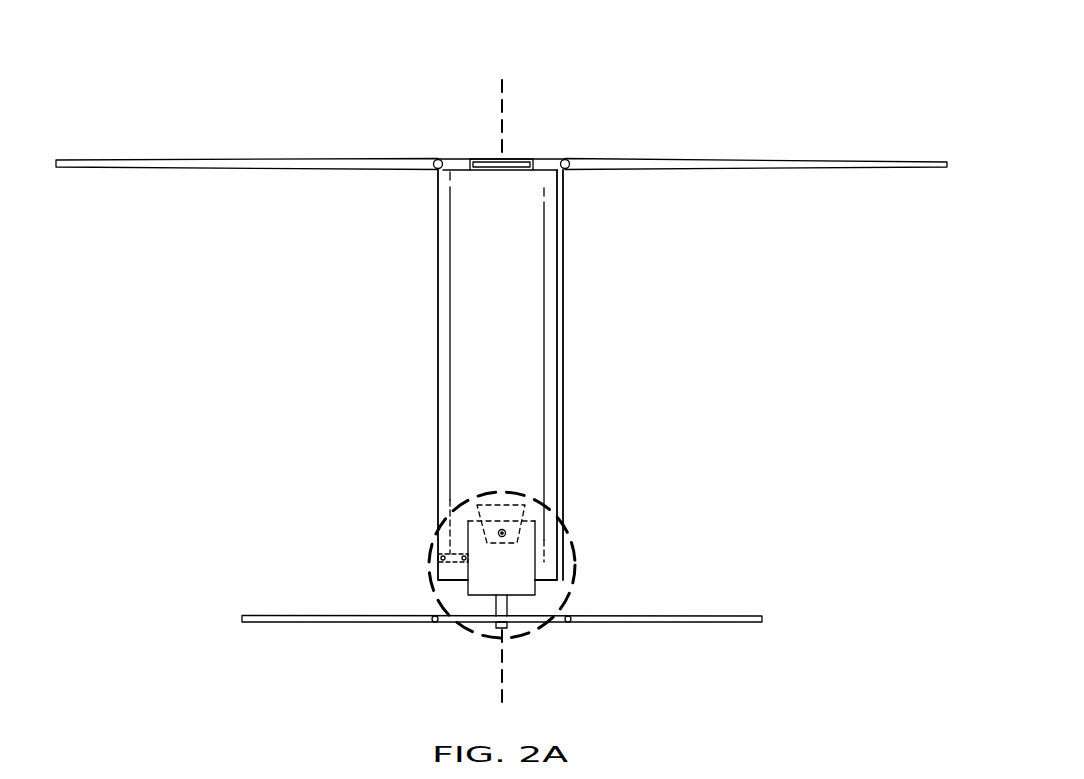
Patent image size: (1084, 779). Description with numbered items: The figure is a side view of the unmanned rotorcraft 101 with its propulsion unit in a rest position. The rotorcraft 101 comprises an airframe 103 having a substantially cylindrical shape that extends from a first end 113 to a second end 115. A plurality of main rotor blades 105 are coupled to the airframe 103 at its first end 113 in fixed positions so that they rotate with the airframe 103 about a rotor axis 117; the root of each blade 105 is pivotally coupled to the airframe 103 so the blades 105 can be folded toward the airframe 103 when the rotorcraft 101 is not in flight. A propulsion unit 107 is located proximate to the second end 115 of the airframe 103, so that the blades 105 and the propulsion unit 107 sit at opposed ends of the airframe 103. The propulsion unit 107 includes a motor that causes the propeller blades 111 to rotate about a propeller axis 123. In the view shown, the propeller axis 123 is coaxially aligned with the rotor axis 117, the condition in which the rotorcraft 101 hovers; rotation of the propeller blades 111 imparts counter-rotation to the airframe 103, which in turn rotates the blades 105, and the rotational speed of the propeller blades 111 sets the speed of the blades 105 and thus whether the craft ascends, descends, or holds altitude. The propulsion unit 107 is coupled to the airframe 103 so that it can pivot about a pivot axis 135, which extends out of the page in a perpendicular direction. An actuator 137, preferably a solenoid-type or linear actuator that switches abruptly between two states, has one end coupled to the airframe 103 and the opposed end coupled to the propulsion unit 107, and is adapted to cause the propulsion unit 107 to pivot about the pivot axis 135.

The unmanned rotorcraft 101 is at (382, 66).
The airframe 103 is at (565, 372).
The main rotor blades 105 is at (757, 160).
The propulsion unit 107 is at (535, 552).
The propeller blades 111 is at (665, 623).
The first end 113 is at (452, 158).
The second end 115 is at (452, 581).
The rotor axis 117 is at (505, 95).
The propeller axis 123 is at (500, 695).
The pivot axis 135 is at (502, 530).
The actuator 137 is at (437, 571).